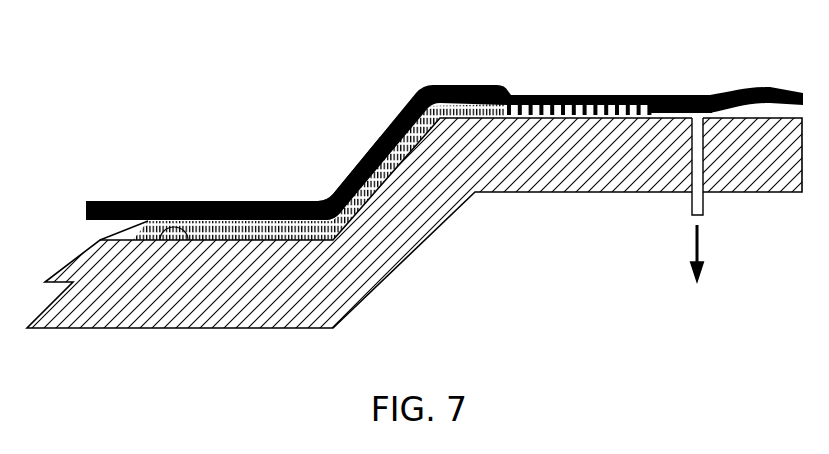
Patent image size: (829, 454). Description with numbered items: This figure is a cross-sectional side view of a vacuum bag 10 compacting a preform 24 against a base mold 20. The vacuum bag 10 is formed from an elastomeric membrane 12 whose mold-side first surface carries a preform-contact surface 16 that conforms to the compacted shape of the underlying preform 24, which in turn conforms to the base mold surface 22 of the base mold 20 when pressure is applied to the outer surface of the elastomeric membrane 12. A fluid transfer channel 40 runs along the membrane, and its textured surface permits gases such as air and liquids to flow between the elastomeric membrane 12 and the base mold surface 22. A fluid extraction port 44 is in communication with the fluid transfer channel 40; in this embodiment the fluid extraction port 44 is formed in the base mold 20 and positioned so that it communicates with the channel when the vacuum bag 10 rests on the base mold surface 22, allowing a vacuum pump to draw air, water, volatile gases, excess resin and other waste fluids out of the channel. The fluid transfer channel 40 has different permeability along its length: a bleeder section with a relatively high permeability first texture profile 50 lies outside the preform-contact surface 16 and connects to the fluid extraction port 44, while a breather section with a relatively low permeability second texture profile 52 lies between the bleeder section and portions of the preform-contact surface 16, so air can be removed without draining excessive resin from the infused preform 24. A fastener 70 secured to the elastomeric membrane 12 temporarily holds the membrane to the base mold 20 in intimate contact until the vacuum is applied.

The vacuum bag 10 is at (358, 109).
The elastomeric membrane 12 is at (453, 84).
The preform-contact surface 16 is at (247, 225).
The base mold 20 is at (360, 268).
The base mold surface 22 is at (162, 240).
The preform 24 is at (331, 196).
The fluid transfer channel 40 is at (610, 117).
The fluid extraction port 44 is at (703, 205).
The first texture profile 50 is at (678, 103).
The second texture profile 52 is at (555, 117).
The fastener 70 is at (770, 113).